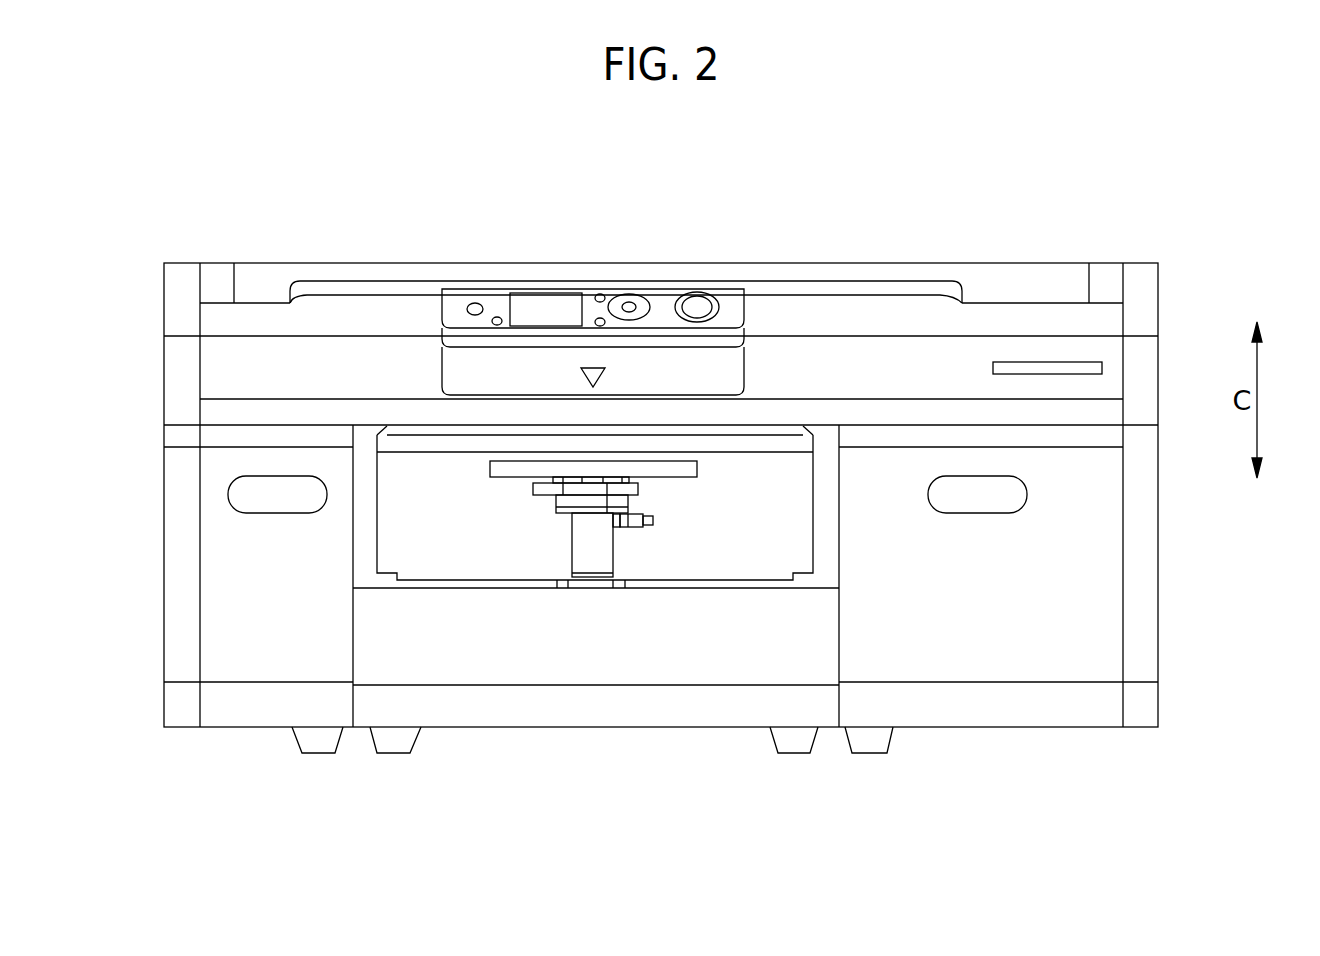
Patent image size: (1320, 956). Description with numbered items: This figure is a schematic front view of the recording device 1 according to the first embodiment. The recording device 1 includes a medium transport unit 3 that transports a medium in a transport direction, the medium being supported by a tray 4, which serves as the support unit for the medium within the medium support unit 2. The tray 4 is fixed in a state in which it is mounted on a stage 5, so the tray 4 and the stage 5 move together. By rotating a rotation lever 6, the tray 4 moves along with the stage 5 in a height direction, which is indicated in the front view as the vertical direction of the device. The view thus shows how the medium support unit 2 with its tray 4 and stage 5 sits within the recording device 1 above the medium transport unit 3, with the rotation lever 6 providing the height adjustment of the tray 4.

The recording device 1 is at (1009, 192).
The medium support unit 2 is at (768, 404).
The medium transport unit 3 is at (745, 637).
The tray 4 is at (413, 447).
The stage 5 is at (513, 468).
The rotation lever 6 is at (603, 490).